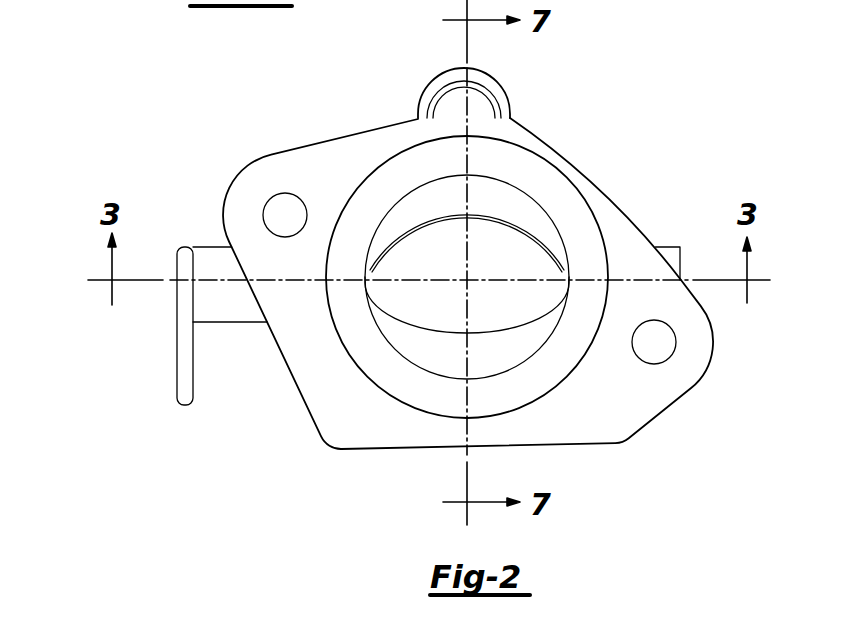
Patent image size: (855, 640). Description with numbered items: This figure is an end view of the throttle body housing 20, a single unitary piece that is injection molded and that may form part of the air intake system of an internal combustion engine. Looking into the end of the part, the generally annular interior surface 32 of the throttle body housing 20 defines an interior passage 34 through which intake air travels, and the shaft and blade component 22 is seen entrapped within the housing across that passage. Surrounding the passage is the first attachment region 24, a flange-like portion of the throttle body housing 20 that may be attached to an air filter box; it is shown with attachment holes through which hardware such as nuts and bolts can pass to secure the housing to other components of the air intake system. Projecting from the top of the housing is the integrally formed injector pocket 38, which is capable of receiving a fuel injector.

The throttle body housing 20 is at (500, 162).
The shaft and blade component 22 is at (408, 257).
The first attachment region 24 is at (603, 203).
The interior surface 32 is at (392, 344).
The interior passage 34 is at (505, 340).
The injector pocket 38 is at (486, 91).